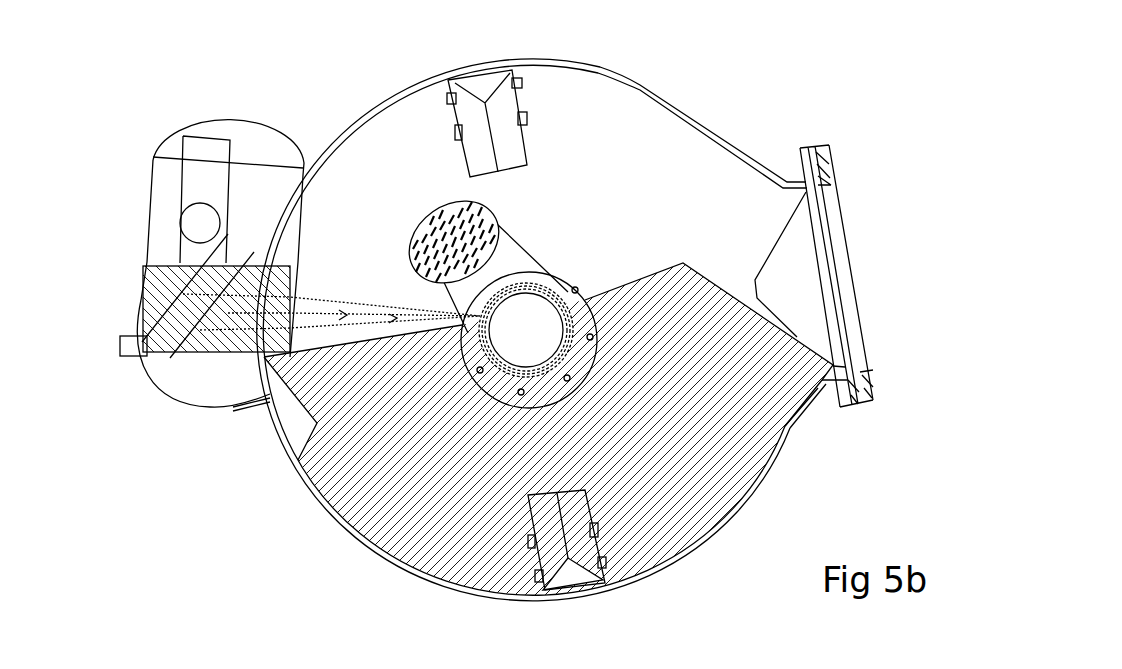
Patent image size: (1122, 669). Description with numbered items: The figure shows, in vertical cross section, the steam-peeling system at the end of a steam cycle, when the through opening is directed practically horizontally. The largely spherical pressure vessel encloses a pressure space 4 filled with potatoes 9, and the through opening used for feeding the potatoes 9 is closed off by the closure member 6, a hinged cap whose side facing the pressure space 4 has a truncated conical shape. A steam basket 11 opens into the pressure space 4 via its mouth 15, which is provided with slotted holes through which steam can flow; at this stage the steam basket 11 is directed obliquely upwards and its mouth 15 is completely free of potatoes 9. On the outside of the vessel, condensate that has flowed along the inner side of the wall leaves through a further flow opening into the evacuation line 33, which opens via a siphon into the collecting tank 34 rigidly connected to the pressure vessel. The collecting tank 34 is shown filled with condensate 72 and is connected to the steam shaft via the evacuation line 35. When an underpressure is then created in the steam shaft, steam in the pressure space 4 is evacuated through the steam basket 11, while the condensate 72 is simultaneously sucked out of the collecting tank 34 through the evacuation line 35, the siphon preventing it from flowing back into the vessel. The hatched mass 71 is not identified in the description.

The pressure space 4 is at (610, 192).
The closure member 6 is at (805, 277).
The potatoes 9 is at (547, 451).
The steam basket 11 is at (452, 300).
The mouth 15 is at (440, 184).
The evacuation line 33 is at (188, 383).
The collecting tank 34 is at (173, 147).
The evacuation line 35 is at (352, 284).
The hatched body 71 is at (378, 506).
The condensate 72 is at (168, 290).